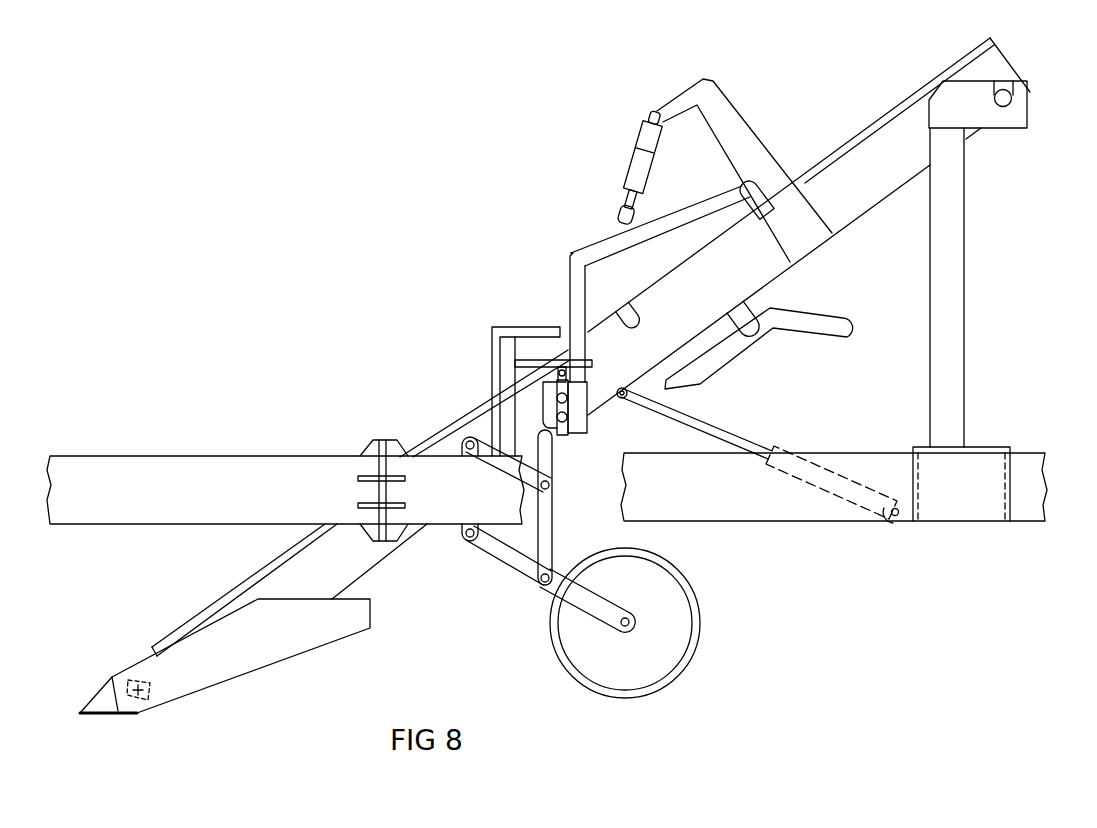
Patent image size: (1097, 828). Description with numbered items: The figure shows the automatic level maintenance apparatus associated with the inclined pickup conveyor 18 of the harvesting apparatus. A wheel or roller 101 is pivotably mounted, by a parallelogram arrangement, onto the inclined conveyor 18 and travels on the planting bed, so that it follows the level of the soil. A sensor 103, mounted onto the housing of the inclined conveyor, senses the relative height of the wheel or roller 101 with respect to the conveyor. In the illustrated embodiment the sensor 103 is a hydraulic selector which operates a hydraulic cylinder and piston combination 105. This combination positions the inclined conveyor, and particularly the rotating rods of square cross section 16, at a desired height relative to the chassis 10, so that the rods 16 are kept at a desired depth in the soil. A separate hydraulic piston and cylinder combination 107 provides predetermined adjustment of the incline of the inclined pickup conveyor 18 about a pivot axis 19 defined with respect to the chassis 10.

The chassis 10 is at (862, 462).
The rotating rods of square cross section 16 is at (151, 683).
The inclined pickup conveyor 18 is at (243, 586).
The pivot axis 19 is at (1012, 99).
The wheel or roller 101 is at (700, 615).
The sensor 103 is at (588, 432).
The hydraulic cylinder and piston combination 105 is at (748, 432).
The hydraulic piston and cylinder combination 107 is at (648, 177).